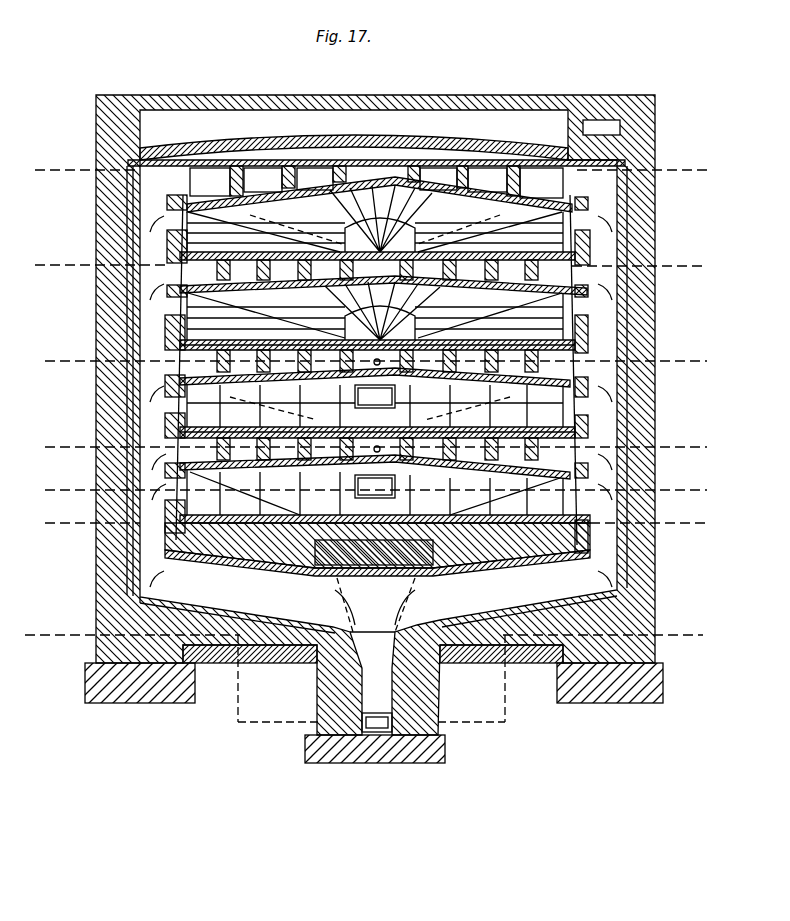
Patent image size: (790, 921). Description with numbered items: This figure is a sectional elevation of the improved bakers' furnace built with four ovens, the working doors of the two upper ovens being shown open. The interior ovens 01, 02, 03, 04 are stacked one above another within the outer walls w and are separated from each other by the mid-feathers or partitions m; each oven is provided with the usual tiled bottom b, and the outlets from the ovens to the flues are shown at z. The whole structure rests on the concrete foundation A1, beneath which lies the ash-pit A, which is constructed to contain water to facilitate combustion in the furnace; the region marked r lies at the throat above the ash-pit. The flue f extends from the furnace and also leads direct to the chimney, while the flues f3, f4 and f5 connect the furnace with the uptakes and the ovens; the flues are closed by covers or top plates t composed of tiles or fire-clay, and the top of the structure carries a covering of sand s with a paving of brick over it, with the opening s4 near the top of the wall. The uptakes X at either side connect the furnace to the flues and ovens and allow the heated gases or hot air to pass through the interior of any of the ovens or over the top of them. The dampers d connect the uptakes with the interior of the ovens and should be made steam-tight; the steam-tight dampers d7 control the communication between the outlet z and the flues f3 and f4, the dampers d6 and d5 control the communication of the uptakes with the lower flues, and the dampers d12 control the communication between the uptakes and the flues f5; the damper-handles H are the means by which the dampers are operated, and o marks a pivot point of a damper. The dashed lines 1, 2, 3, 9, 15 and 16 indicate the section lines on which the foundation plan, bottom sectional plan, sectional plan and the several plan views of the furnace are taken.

The outer wall w is at (96, 137).
The covering of sand s is at (372, 138).
The wall opening s4 is at (620, 128).
The covers or top plates t is at (192, 160).
The flue f5 is at (376, 181).
The mid-feathers or partitions m is at (375, 181).
The pivot o is at (377, 405).
The damper d12 is at (167, 200).
The steam-tight damper d7 is at (167, 290).
The damper d6 is at (165, 353).
The damper d5 is at (165, 438).
The section line 16 16 is at (374, 172).
The section line 15 15 is at (374, 266).
The section line 9 9 is at (375, 406).
The section line 3 3 is at (375, 492).
The section line 2 2 is at (375, 523).
The section line 1 1 is at (370, 674).
The uptake X is at (377, 405).
The damper-handle H is at (385, 306).
The damper d is at (375, 359).
The tiled bottom b is at (375, 371).
The outlet z is at (372, 365).
The oven 04 is at (428, 242).
The oven 03 is at (428, 331).
The oven 02 is at (398, 418).
The oven 01 is at (394, 513).
The flue f4 is at (225, 322).
The flue f3 is at (268, 384).
The flue f is at (367, 591).
The funnel r is at (372, 647).
The ash-pit A is at (377, 708).
The concrete foundation A1 is at (110, 703).